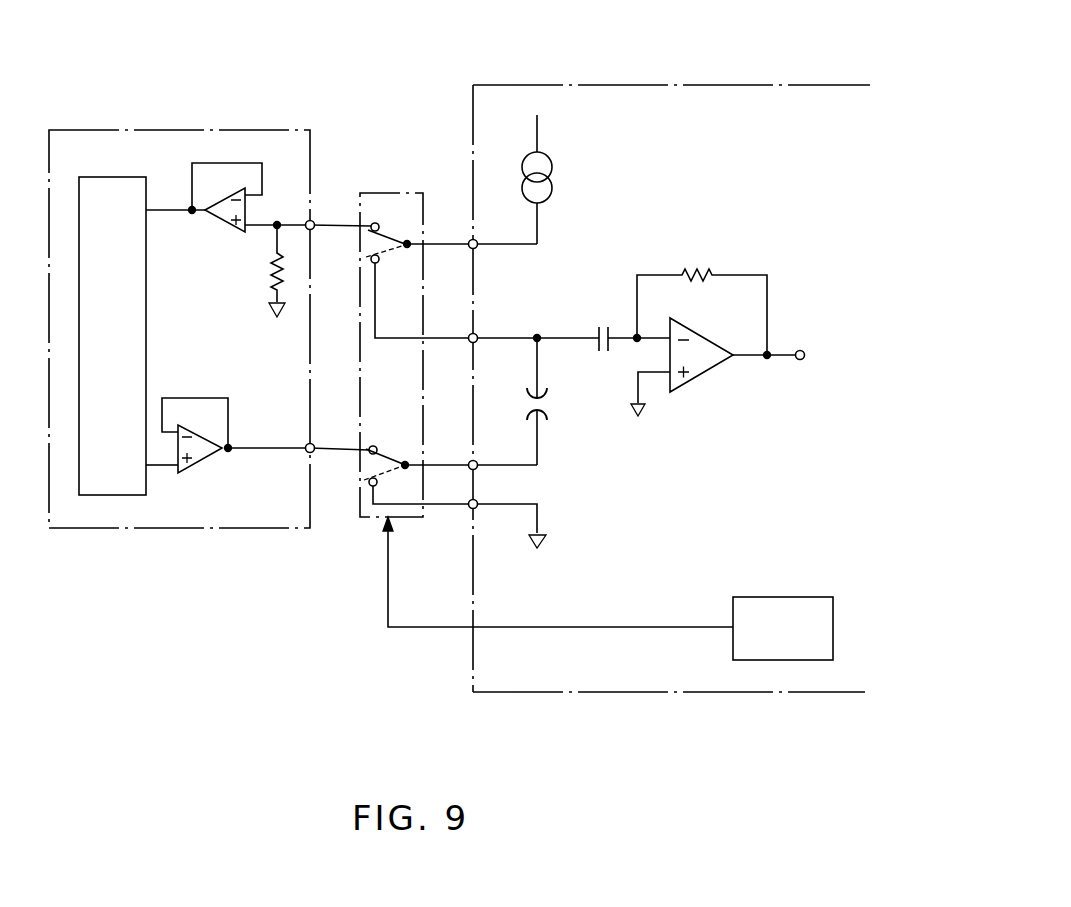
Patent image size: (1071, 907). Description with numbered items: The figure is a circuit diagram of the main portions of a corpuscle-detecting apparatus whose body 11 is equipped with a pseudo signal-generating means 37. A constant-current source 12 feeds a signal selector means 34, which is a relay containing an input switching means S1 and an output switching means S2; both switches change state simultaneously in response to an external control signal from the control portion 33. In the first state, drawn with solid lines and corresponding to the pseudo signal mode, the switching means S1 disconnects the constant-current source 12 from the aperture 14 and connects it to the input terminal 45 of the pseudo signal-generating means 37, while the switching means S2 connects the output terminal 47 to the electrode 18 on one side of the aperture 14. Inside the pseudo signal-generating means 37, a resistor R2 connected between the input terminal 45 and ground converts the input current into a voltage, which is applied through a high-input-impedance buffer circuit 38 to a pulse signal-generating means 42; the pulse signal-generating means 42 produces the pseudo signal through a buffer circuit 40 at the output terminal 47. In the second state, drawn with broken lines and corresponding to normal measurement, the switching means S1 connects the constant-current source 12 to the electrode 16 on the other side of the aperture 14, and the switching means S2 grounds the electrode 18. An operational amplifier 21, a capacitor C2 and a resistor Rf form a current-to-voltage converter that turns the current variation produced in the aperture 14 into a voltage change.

The body of the apparatus 11 is at (681, 692).
The constant-current source 12 is at (555, 177).
The aperture 14 is at (583, 429).
The electrode 16 is at (550, 392).
The electrode 18 is at (542, 413).
The operational amplifier 21 is at (693, 380).
The control portion 33 is at (608, 588).
The signal selector means 34 is at (373, 193).
The pseudo signal-generating means 37 is at (160, 128).
The buffer circuit 38 is at (236, 164).
The buffer circuit 40 is at (199, 466).
The pulse signal-generating means 42 is at (103, 176).
The input terminal 45 is at (313, 221).
The output terminal 47 is at (338, 423).
The input switching means S1 is at (395, 230).
The output switching means S2 is at (368, 471).
The resistor R2 is at (253, 271).
The resistor Rf is at (701, 290).
The capacitor C2 is at (603, 317).